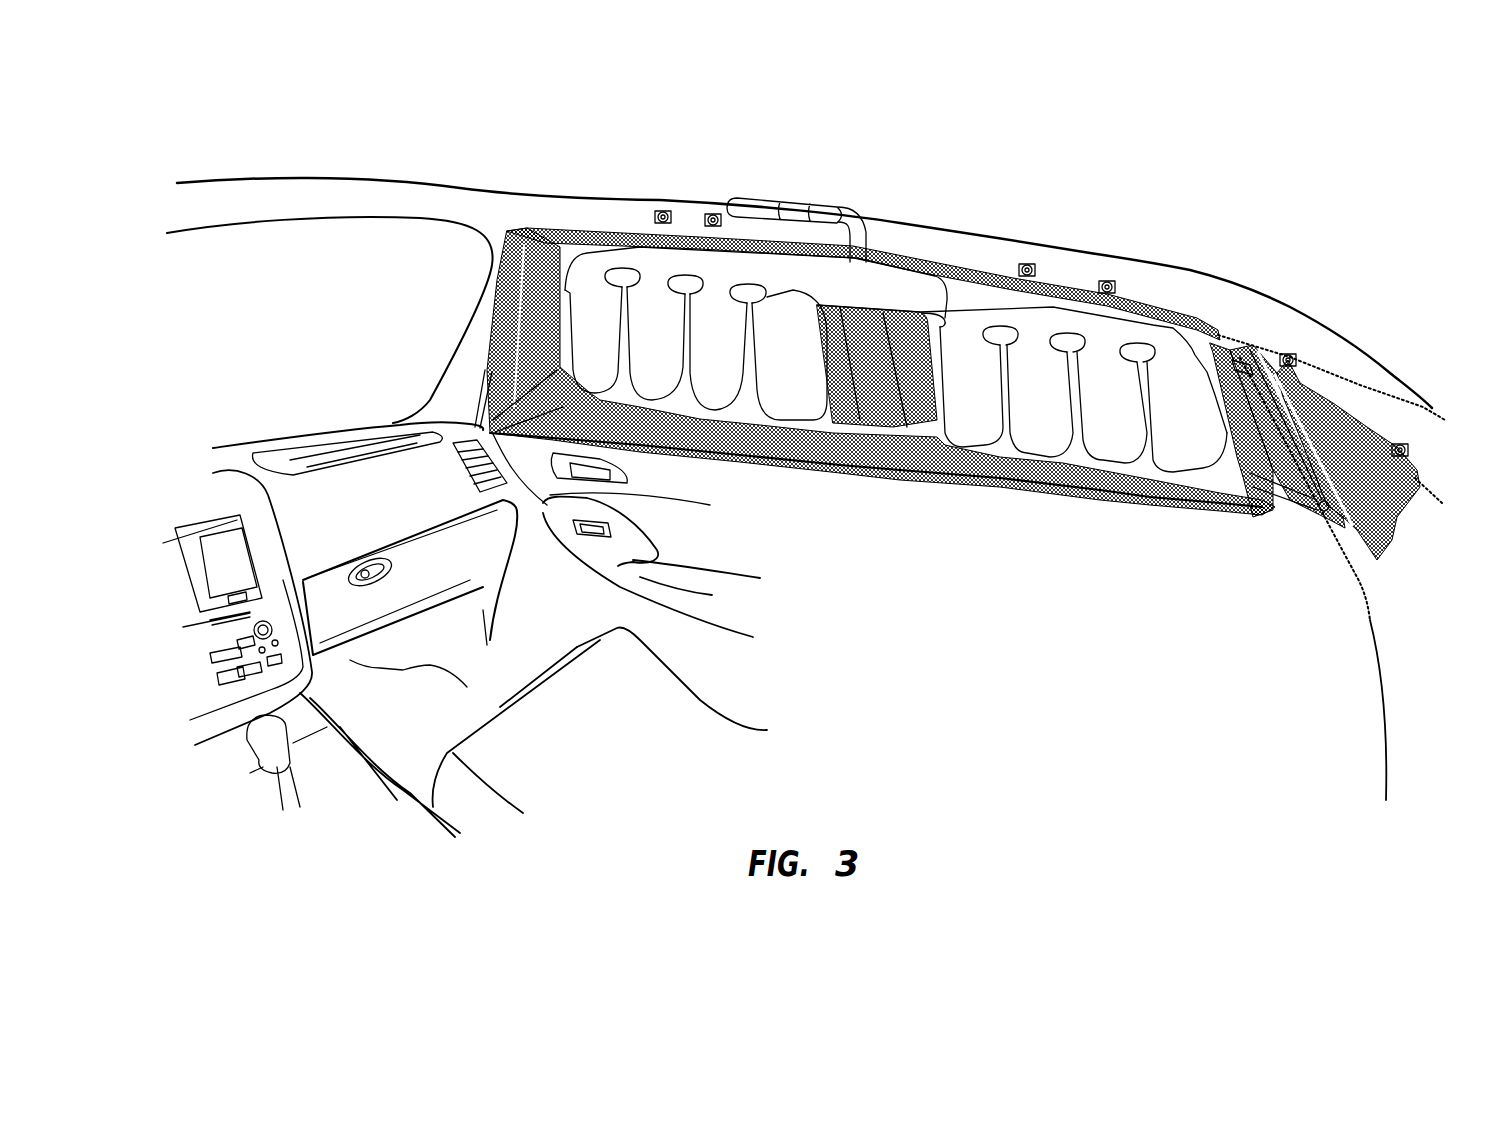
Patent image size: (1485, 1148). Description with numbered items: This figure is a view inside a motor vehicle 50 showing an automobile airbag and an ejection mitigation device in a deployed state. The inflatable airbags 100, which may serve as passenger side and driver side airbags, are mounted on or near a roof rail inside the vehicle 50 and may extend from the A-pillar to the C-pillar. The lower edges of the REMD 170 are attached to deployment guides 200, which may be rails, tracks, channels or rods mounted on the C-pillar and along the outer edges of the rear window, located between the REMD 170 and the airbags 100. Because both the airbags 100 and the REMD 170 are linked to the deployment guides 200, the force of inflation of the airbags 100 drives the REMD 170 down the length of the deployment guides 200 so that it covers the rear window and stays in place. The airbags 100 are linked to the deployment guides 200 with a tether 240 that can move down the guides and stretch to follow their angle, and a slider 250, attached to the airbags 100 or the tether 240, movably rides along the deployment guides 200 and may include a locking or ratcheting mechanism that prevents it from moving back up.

The vehicle 50 is at (1209, 250).
The inflatable airbags 100 is at (1033, 382).
The REMD 170 is at (1390, 543).
The deployment guides 200 is at (1295, 430).
The tether 240 is at (1280, 497).
The slider 250 is at (1350, 470).